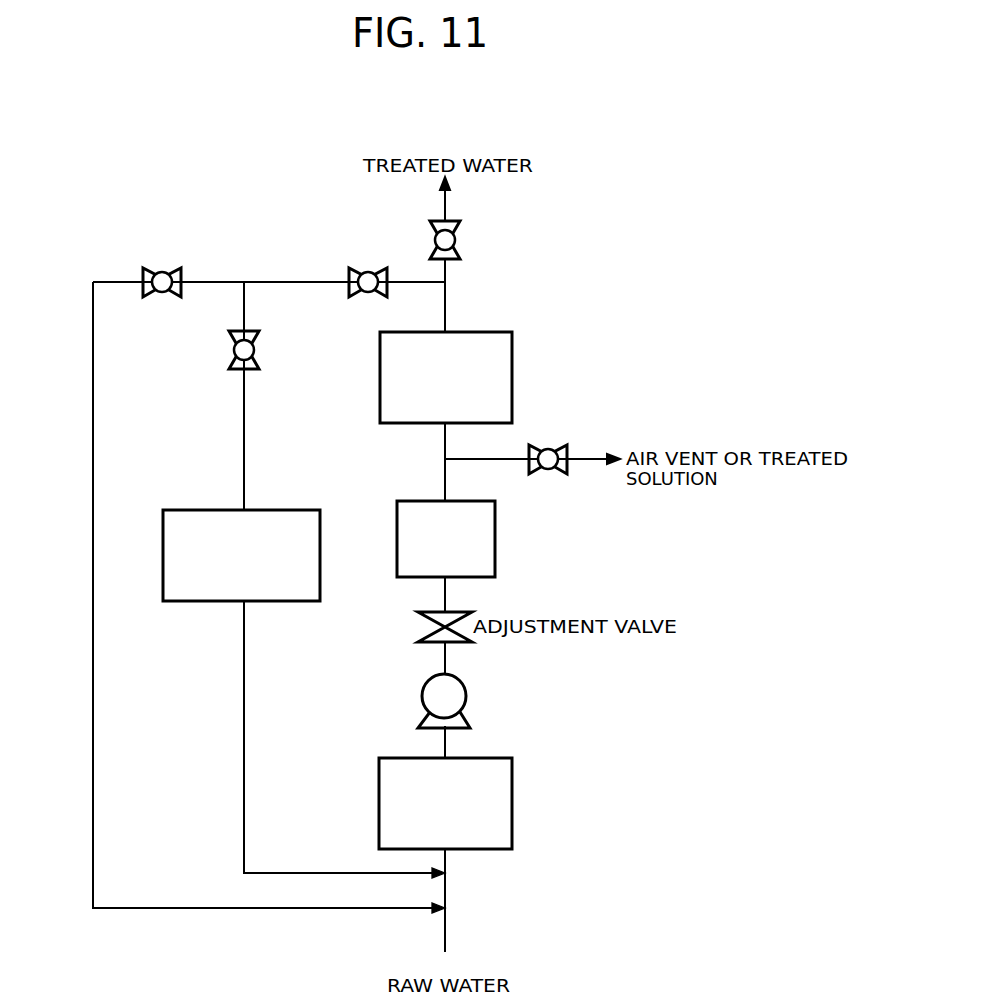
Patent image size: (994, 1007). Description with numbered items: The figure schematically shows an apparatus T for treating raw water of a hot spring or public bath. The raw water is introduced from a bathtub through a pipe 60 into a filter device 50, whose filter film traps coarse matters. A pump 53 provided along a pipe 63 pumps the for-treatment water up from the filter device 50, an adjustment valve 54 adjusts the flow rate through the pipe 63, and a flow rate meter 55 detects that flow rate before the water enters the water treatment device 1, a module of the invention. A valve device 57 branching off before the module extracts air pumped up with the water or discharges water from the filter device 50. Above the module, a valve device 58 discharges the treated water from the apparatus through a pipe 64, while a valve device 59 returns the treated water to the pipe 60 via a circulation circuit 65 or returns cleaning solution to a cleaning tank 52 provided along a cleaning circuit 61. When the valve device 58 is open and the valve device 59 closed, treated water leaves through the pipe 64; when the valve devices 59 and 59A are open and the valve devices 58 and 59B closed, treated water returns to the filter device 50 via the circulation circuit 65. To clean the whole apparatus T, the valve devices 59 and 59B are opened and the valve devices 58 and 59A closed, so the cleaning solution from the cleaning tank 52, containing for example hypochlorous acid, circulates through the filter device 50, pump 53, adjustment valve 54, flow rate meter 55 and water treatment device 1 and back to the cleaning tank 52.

The apparatus T is at (575, 150).
The water treatment device 1 is at (520, 343).
The filter device 50 is at (513, 800).
The cleaning tank 52 is at (190, 602).
The pump 53 is at (468, 697).
The adjustment valve 54 is at (418, 622).
The flow rate meter 55 is at (496, 533).
The valve device 57 is at (548, 443).
The valve device 58 is at (462, 240).
The valve device 59 is at (370, 266).
The valve device 59A is at (163, 266).
The valve device 59B is at (228, 350).
The pipe 60 is at (447, 933).
The cleaning circuit 61 is at (280, 870).
The pipe 63 is at (447, 602).
The pipe 64 is at (447, 298).
The circulation circuit 65 is at (92, 507).